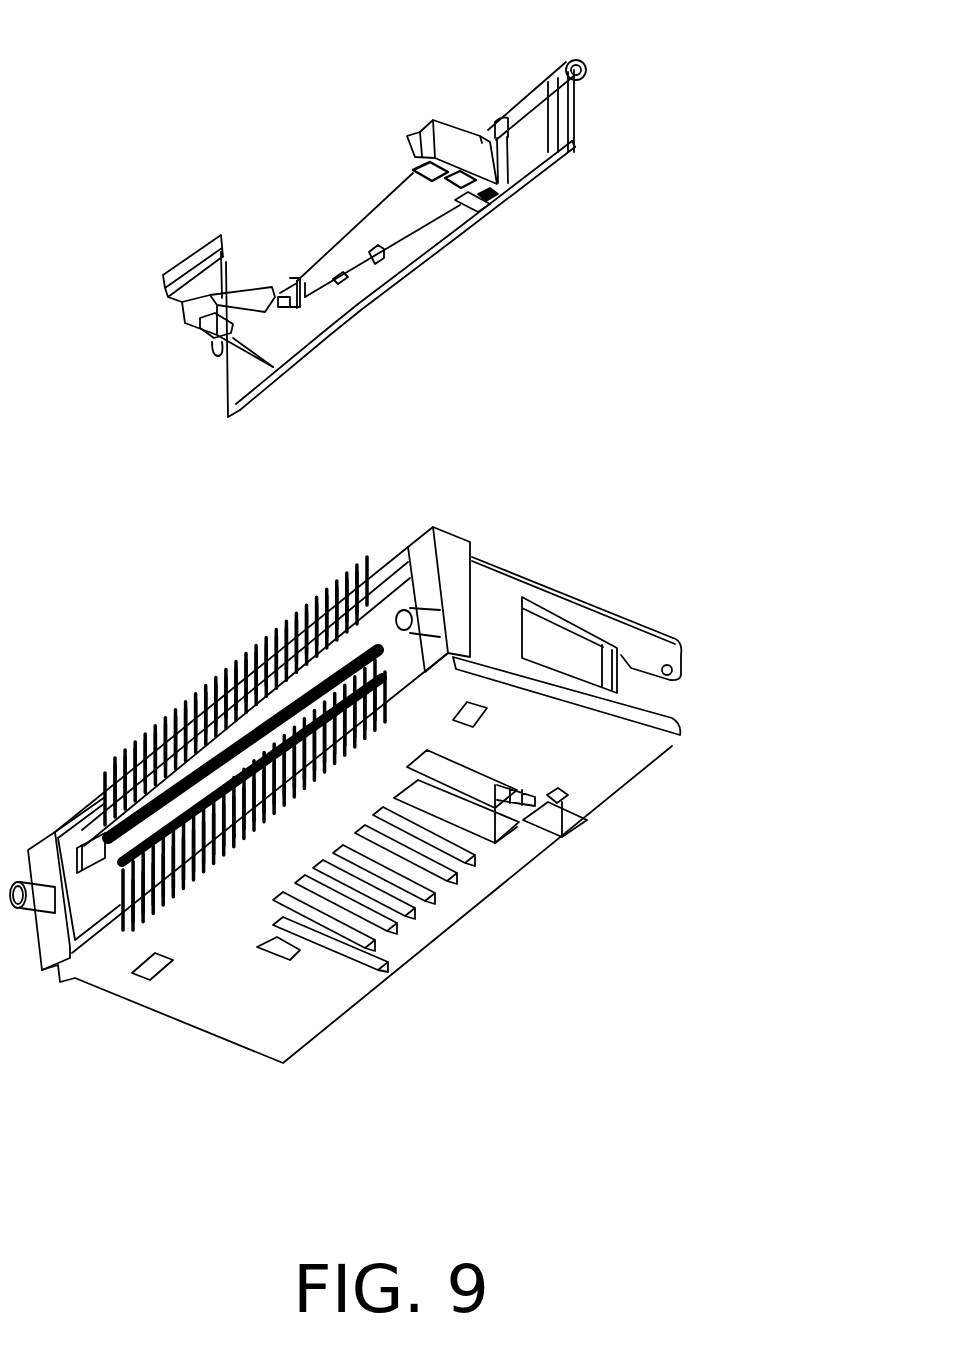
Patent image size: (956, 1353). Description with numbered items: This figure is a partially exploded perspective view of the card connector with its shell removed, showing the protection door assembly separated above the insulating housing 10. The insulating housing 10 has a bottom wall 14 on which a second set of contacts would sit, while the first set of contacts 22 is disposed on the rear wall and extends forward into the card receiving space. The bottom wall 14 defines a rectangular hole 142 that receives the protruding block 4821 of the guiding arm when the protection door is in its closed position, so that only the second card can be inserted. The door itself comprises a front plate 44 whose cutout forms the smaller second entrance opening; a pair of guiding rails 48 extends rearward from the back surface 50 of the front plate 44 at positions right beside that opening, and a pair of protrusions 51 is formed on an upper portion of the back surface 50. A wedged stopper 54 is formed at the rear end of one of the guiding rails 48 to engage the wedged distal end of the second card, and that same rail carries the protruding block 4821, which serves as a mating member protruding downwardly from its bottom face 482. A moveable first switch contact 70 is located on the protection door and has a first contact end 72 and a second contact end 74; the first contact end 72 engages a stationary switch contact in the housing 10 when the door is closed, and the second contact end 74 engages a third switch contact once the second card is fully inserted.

The insulating housing 10 is at (475, 910).
The bottom wall 14 is at (210, 1000).
The rectangular hole 142 is at (277, 947).
The first set of contacts 22 is at (157, 732).
The front plate 44 is at (576, 122).
The guiding rails 48 is at (450, 135).
The bottom face 482 is at (253, 340).
The protruding block 4821 is at (210, 337).
The back surface 50 is at (537, 111).
The protrusions 51 is at (514, 106).
The wedged stopper 54 is at (167, 288).
The first switch contact 70 is at (468, 200).
The first contact end 72 is at (414, 177).
The second contact end 74 is at (466, 191).